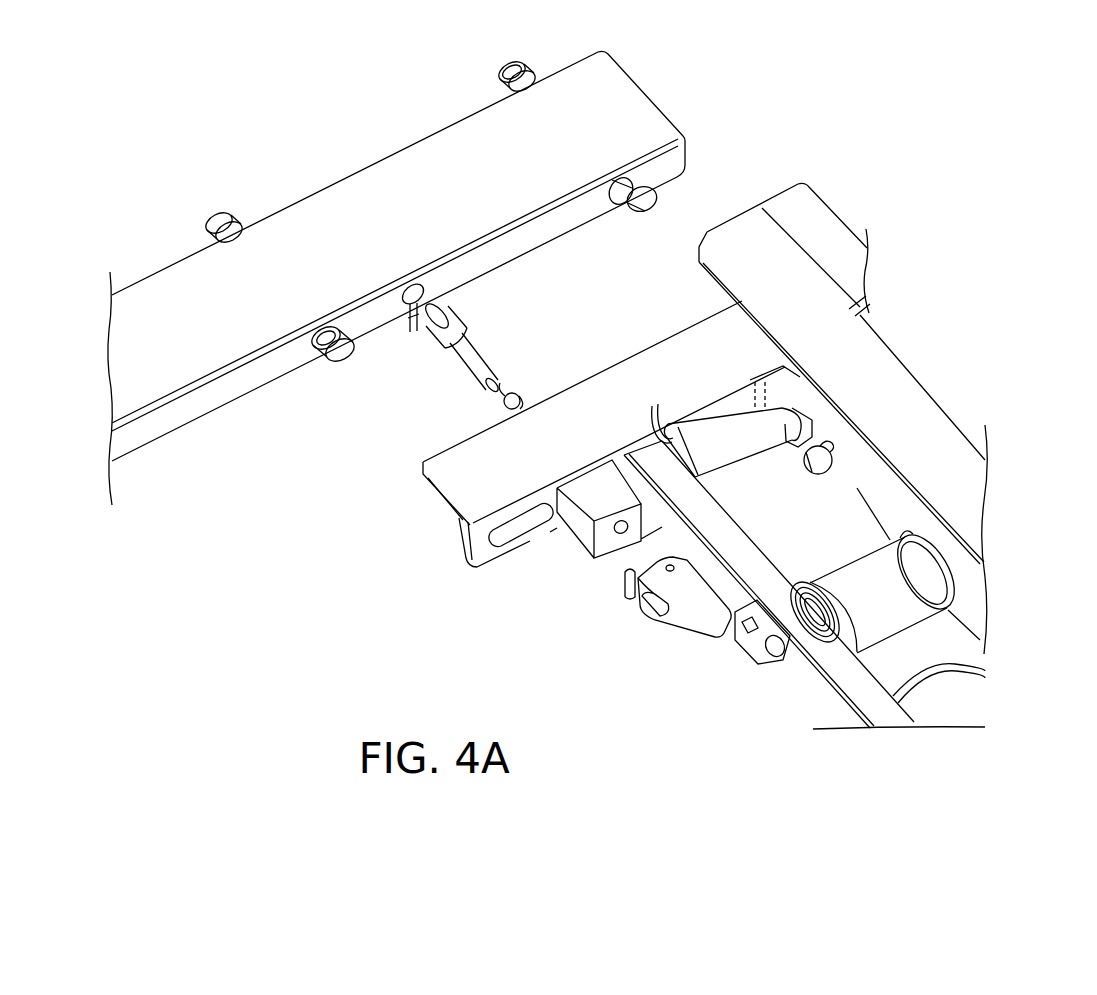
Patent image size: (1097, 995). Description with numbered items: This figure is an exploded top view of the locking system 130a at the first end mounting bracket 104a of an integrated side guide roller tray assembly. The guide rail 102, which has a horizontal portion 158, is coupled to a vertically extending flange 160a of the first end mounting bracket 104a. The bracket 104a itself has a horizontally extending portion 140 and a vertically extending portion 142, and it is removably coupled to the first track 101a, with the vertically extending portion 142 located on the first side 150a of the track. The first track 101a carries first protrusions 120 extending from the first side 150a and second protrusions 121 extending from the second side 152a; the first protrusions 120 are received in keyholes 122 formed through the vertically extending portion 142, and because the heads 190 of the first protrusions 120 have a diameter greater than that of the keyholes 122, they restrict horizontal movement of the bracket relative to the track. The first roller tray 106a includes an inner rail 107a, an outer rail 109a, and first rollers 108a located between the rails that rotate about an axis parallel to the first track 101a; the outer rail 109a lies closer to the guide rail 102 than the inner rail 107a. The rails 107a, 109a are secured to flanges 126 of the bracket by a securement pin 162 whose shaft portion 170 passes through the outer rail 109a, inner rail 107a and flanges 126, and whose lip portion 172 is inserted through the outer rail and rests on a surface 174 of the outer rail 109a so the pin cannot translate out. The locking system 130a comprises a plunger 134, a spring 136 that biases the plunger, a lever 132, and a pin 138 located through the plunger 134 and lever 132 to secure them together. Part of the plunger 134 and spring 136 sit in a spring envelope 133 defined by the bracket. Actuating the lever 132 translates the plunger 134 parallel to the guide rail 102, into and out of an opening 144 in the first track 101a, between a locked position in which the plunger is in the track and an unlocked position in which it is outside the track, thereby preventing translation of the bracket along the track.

The first track 101a is at (333, 228).
The guide rail 102 is at (843, 414).
The first end mounting bracket 104a is at (604, 457).
The first roller tray 106a is at (815, 673).
The inner rail 107a is at (854, 700).
The first rollers 108a is at (913, 560).
The outer rail 109a is at (882, 466).
The first protrusions 120 is at (634, 209).
The second protrusions 121 is at (214, 222).
The keyholes 122 is at (524, 541).
The flanges 126 is at (655, 422).
The locking system 130a is at (651, 655).
The lever 132 is at (683, 621).
The spring envelope 133 is at (589, 506).
The plunger 134 is at (471, 348).
The spring 136 is at (513, 392).
The pin 138 is at (627, 591).
The horizontally extending portion 140 is at (498, 474).
The vertically extending portion 142 is at (466, 556).
The opening 144 is at (412, 338).
The first side 150a is at (182, 416).
The second side 152a is at (420, 136).
The horizontal portion 158 is at (803, 349).
The vertically extending flange 160a is at (838, 237).
The securement pin 162 is at (745, 420).
The shaft portion 170 is at (743, 449).
The lip portion 172 is at (818, 475).
The surface 174 is at (836, 488).
The heads 190 is at (527, 68).